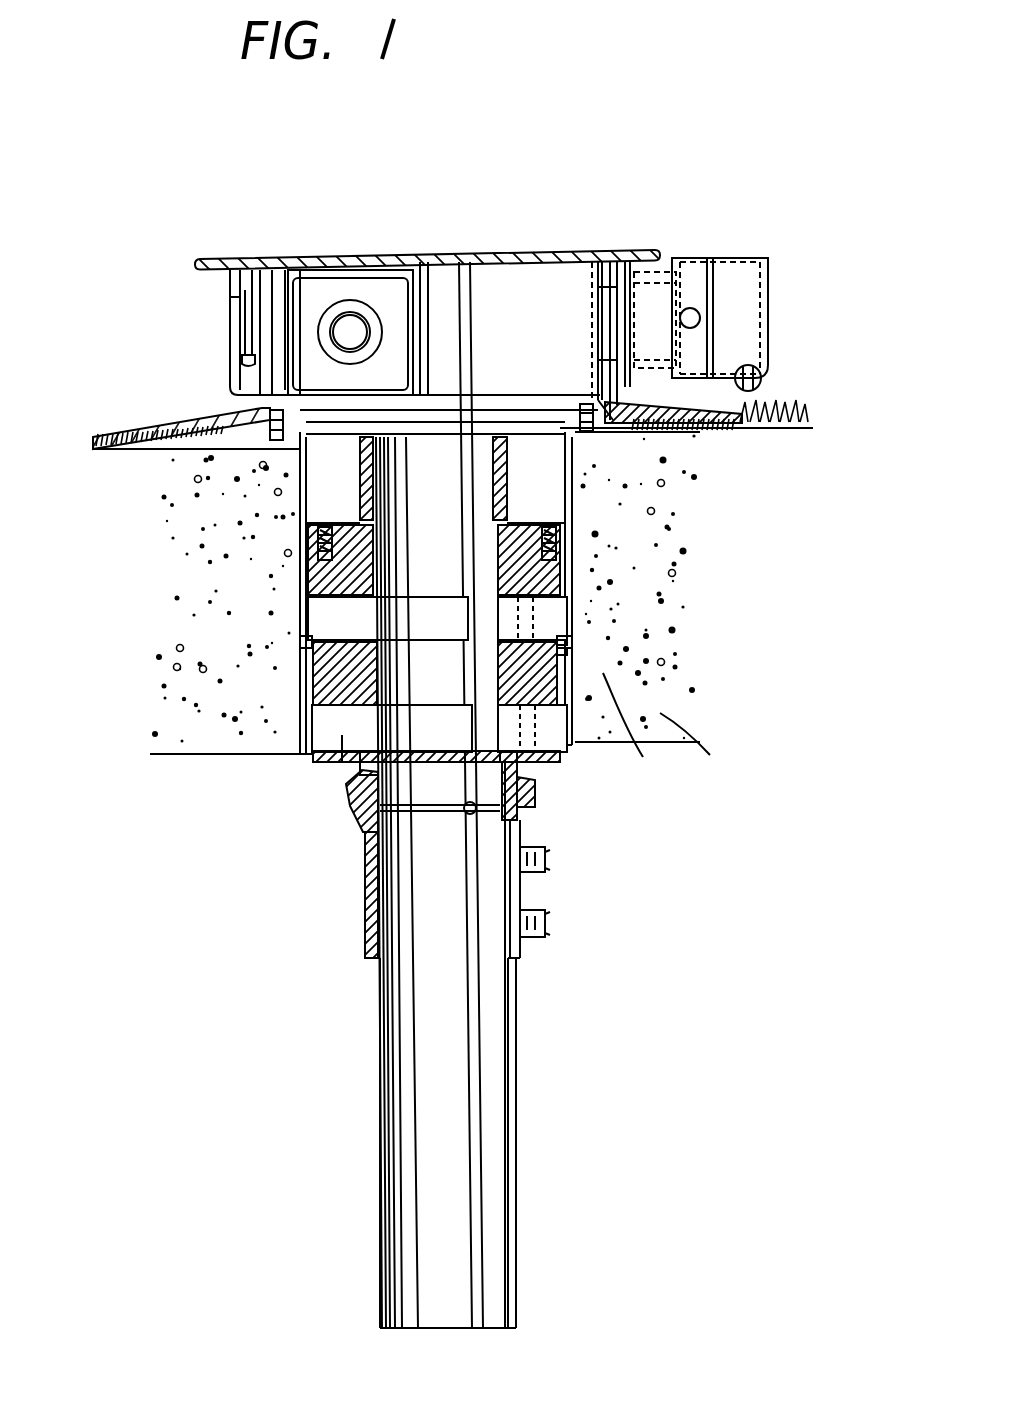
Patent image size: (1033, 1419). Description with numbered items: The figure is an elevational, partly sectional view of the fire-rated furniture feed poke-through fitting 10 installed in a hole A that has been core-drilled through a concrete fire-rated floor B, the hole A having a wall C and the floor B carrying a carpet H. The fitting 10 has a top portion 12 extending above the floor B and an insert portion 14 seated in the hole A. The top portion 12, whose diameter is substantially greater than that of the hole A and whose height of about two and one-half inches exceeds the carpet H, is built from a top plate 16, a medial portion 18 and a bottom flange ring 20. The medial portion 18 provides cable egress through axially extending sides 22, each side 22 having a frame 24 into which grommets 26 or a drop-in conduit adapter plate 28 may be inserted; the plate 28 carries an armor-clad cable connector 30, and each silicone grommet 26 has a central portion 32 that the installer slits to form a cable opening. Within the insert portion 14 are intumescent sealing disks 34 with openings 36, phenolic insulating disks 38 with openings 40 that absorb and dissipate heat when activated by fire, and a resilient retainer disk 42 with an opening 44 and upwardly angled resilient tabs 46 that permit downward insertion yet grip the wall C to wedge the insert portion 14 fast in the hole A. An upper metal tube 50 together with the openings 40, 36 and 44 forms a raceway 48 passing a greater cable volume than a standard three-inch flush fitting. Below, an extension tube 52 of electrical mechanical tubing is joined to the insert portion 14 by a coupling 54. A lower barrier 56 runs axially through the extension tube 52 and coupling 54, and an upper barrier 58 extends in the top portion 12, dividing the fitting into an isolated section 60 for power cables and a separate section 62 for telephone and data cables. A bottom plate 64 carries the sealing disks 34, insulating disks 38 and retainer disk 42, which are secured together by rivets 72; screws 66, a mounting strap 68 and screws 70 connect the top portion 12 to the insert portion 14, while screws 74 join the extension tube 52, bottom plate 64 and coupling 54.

The fitting 10 is at (508, 257).
The top portion 12 is at (235, 343).
The insert portion 14 is at (305, 740).
The top plate 16 is at (547, 253).
The medial portion 18 is at (280, 316).
The bottom flange ring 20 is at (205, 425).
The side 22 is at (328, 282).
The frame 24 is at (437, 286).
The grommet 26 is at (297, 283).
The drop-in conduit adapter plate 28 is at (640, 270).
The armor-clad cable connector 30 is at (728, 274).
The central portion 32 is at (350, 330).
The sealing disk 34 is at (560, 613).
The opening 36 is at (420, 623).
The insulating disk 38 is at (560, 572).
The opening 40 is at (320, 570).
The retainer disk 42 is at (317, 647).
The opening 44 is at (565, 653).
The resilient tab 46 is at (565, 642).
The raceway 48 is at (362, 497).
The upper metal tube 50 is at (575, 464).
The extension tube 52 is at (517, 1048).
The coupling 54 is at (517, 825).
The lower barrier 56 is at (482, 993).
The upper barrier 58 is at (478, 325).
The section 60 is at (495, 1110).
The section 62 is at (427, 1142).
The bottom plate 64 is at (355, 752).
The screws 66 is at (262, 412).
The mounting strap 68 is at (300, 477).
The screws 70 is at (330, 545).
The rivets 72 is at (560, 597).
The screws 74 is at (527, 907).
The hole A is at (643, 757).
The floor B is at (710, 755).
The wall C is at (265, 748).
The carpet H is at (780, 404).